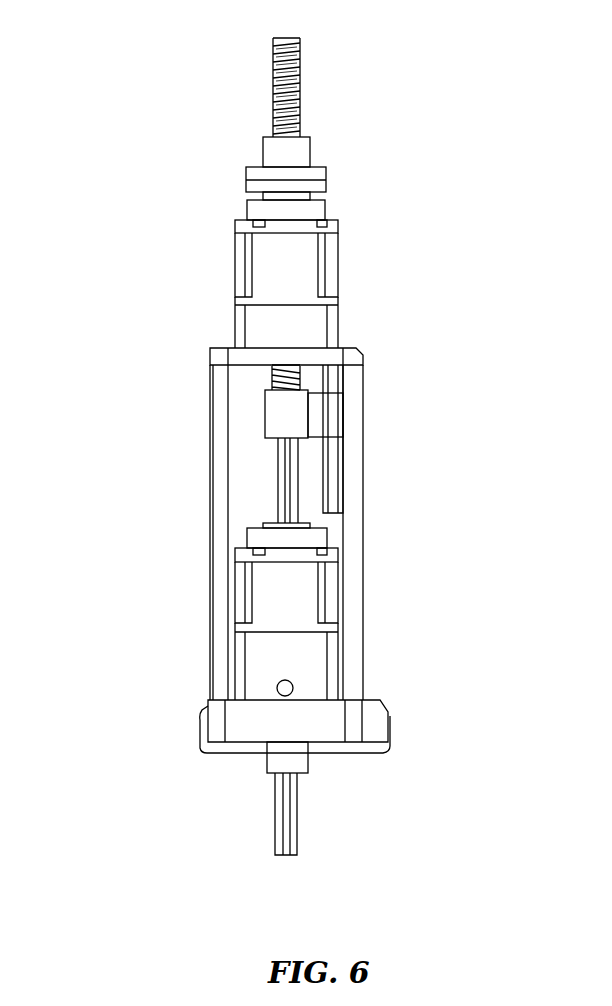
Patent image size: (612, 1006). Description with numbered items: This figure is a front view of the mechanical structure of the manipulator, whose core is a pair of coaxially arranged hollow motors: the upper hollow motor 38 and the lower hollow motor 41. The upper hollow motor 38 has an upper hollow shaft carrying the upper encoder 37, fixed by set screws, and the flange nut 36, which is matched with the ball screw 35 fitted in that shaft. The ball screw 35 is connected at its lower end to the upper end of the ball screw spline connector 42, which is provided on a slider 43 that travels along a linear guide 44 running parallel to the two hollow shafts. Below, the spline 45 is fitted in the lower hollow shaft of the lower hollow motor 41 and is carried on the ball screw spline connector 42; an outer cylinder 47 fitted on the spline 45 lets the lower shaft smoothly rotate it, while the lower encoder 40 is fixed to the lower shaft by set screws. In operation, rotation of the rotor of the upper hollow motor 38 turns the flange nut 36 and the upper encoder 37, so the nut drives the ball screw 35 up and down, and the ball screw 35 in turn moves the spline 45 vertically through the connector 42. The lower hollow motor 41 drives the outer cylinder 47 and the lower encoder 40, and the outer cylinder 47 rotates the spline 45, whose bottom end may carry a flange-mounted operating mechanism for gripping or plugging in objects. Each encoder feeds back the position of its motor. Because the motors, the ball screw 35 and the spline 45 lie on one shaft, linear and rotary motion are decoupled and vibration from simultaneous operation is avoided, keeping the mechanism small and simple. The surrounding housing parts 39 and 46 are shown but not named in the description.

The ball screw 35 is at (180, 73).
The flange nut 36 is at (193, 169).
The upper encoder 37 is at (192, 267).
The upper hollow motor 38 is at (199, 339).
The outer housing 39 is at (211, 524).
The lower encoder 40 is at (193, 605).
The lower hollow motor 41 is at (199, 671).
The ball screw spline connector 42 is at (398, 239).
The slider 43 is at (419, 298).
The linear guide 44 is at (427, 411).
The spline 45 is at (397, 483).
The base plate 46 is at (365, 644).
The outer cylinder 47 is at (399, 757).